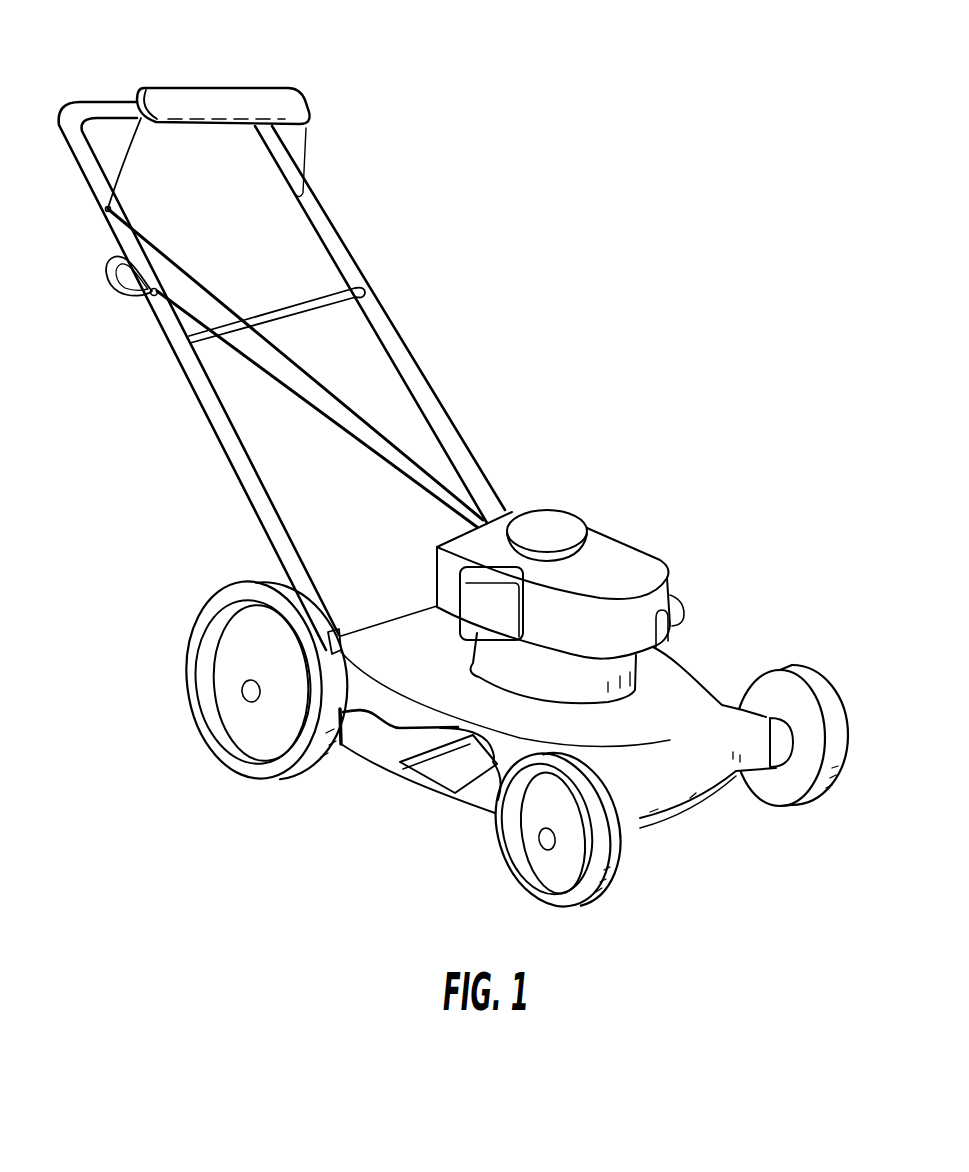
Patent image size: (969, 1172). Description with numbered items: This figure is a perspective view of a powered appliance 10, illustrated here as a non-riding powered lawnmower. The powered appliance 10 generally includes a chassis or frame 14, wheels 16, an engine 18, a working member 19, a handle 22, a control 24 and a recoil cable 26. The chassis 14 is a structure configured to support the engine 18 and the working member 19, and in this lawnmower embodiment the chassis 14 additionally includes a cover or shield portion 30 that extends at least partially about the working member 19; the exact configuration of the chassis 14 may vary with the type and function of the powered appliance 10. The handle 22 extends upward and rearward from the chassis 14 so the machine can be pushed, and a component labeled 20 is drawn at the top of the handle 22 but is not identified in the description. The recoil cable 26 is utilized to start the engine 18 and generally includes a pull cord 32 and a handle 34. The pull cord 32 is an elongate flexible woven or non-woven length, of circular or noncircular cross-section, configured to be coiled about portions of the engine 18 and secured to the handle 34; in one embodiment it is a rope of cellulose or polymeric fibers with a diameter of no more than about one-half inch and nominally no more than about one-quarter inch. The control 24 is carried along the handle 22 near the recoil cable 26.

The powered appliance 10 is at (785, 593).
The chassis 14 is at (713, 797).
The wheels 16 is at (207, 728).
The engine 18 is at (613, 560).
The working member 19 is at (423, 781).
The handle grip 20 is at (203, 100).
The handle 22 is at (77, 108).
The control 24 is at (307, 147).
The recoil cable 26 is at (305, 403).
The shield portion 30 is at (188, 275).
The pull cord 32 is at (317, 409).
The handle 34 is at (110, 291).